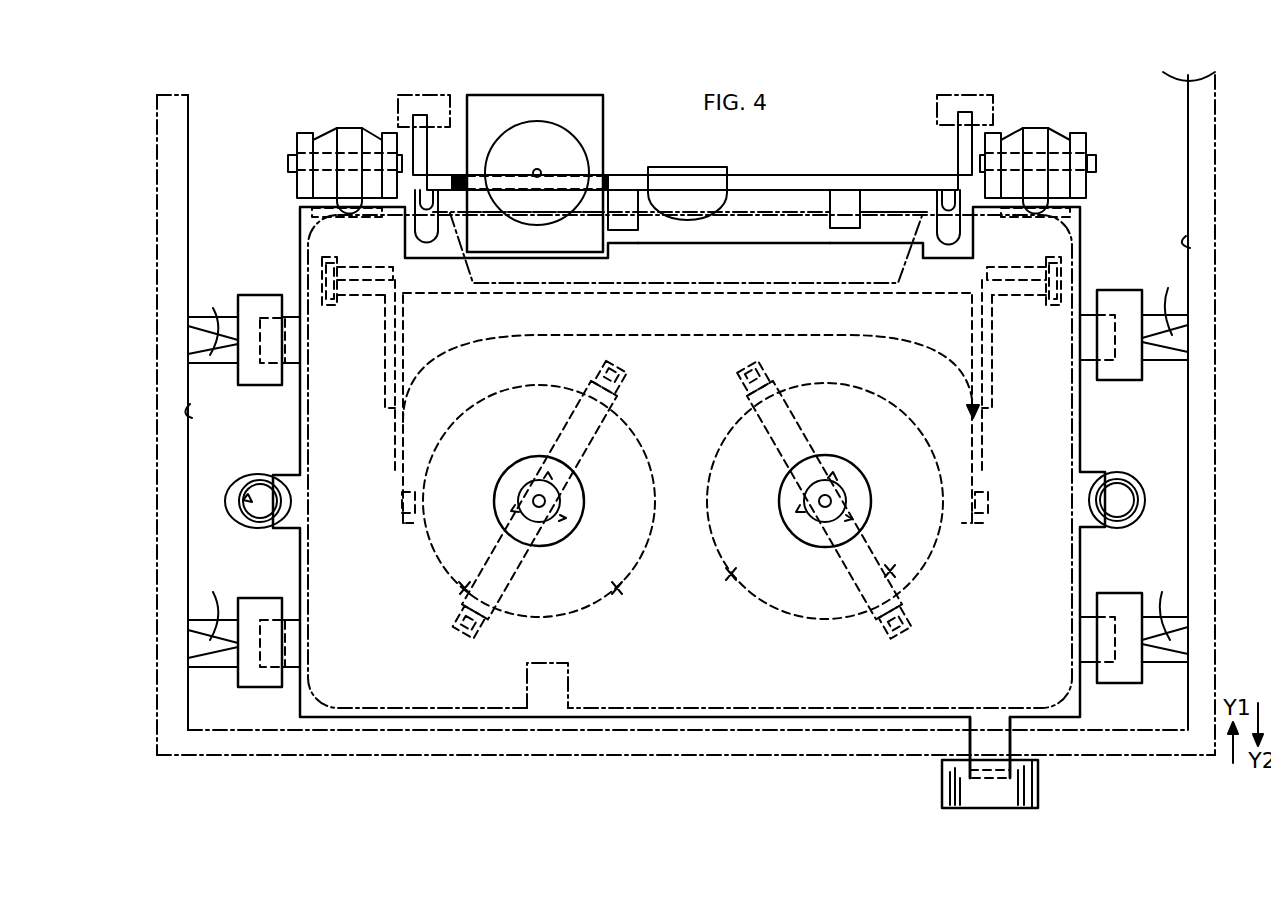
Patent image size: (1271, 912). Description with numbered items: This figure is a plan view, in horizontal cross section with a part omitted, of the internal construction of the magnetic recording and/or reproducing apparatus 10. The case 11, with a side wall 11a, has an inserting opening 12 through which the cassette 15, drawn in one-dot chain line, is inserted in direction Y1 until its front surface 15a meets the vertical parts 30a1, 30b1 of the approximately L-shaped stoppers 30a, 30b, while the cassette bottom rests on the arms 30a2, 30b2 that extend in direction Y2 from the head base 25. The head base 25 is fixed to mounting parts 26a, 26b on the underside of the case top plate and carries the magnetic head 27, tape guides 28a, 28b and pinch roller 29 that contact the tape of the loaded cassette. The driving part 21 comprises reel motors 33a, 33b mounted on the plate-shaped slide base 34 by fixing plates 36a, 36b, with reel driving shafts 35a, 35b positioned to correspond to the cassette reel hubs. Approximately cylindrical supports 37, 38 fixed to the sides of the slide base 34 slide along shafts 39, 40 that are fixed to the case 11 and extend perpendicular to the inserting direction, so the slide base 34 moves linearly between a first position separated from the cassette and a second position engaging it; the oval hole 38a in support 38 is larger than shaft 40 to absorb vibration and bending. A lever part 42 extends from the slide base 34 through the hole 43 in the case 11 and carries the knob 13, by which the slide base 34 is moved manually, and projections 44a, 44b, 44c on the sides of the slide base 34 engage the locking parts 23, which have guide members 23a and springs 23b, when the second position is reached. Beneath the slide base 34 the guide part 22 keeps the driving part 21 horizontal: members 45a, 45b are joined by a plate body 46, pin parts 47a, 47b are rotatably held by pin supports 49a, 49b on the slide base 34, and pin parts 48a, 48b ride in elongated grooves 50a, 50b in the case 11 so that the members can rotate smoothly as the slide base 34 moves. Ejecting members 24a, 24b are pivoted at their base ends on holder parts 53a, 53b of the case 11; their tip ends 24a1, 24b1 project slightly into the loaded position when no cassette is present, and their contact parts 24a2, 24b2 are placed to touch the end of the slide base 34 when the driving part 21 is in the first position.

The magnetic recording and/or reproducing apparatus 10 is at (219, 90).
The case 11 is at (190, 548).
The chassis side wall 11a is at (188, 412).
The inserting opening 12 is at (517, 757).
The manipulation part (knob) 13 is at (1040, 780).
The cassette 15 is at (772, 702).
The front surface of the cassette 15a is at (760, 200).
The driving part 21 is at (656, 680).
The guide part 22 is at (710, 306).
The locking parts 23 is at (266, 386).
The guide member 23a is at (690, 464).
The spring 23b is at (235, 342).
The ejecting member 24a is at (1069, 154).
The tip end of the ejecting member 24a1 is at (1036, 190).
The contact part 24a2 is at (1072, 213).
The ejecting member 24b is at (313, 155).
The tip end of the ejecting member 24b1 is at (348, 190).
The contact part 24b2 is at (310, 213).
The head base 25 is at (792, 190).
The mounting part 26a is at (937, 104).
The mounting part 26b is at (398, 104).
The magnetic head 27 is at (684, 180).
The tape guide 28a is at (843, 198).
The tape guide 28b is at (622, 198).
The pinch roller 29 is at (522, 128).
The stopper 30a is at (904, 268).
The vertical part of the stopper 30a1 is at (940, 235).
The arm of the stopper 30a2 is at (949, 205).
The stopper 30b is at (466, 265).
The vertical part of the stopper 30b1 is at (430, 235).
The arm of the stopper 30b2 is at (428, 203).
The reel motor 33a is at (732, 578).
The reel motor 33b is at (620, 590).
The slide base 34 is at (600, 698).
The reel driving shaft 35a is at (812, 515).
The reel driving shaft 35b is at (543, 515).
The fixing plate 36a is at (905, 580).
The fixing plate 36b is at (465, 600).
The support 37 is at (1113, 473).
The support 38 is at (260, 476).
The oval hole 38a is at (246, 498).
The shaft 39 is at (1122, 490).
The shaft 40 is at (254, 510).
The lever part 42 is at (968, 740).
The hole 43 is at (962, 742).
The projection 44a is at (1088, 335).
The projection 44b is at (298, 318).
The projection 44c is at (292, 643).
The member 45a is at (984, 430).
The member 45b is at (396, 452).
The plate body 46 is at (540, 336).
The pin part 47a is at (985, 512).
The pin part 47b is at (402, 502).
The pin part 48a is at (1048, 265).
The pin part 48b is at (322, 265).
The pin support 49a is at (990, 492).
The pin support 49b is at (410, 520).
The groove 50a is at (1062, 270).
The groove 50b is at (332, 300).
The holder part 53a is at (1084, 136).
The holder part 53b is at (304, 136).